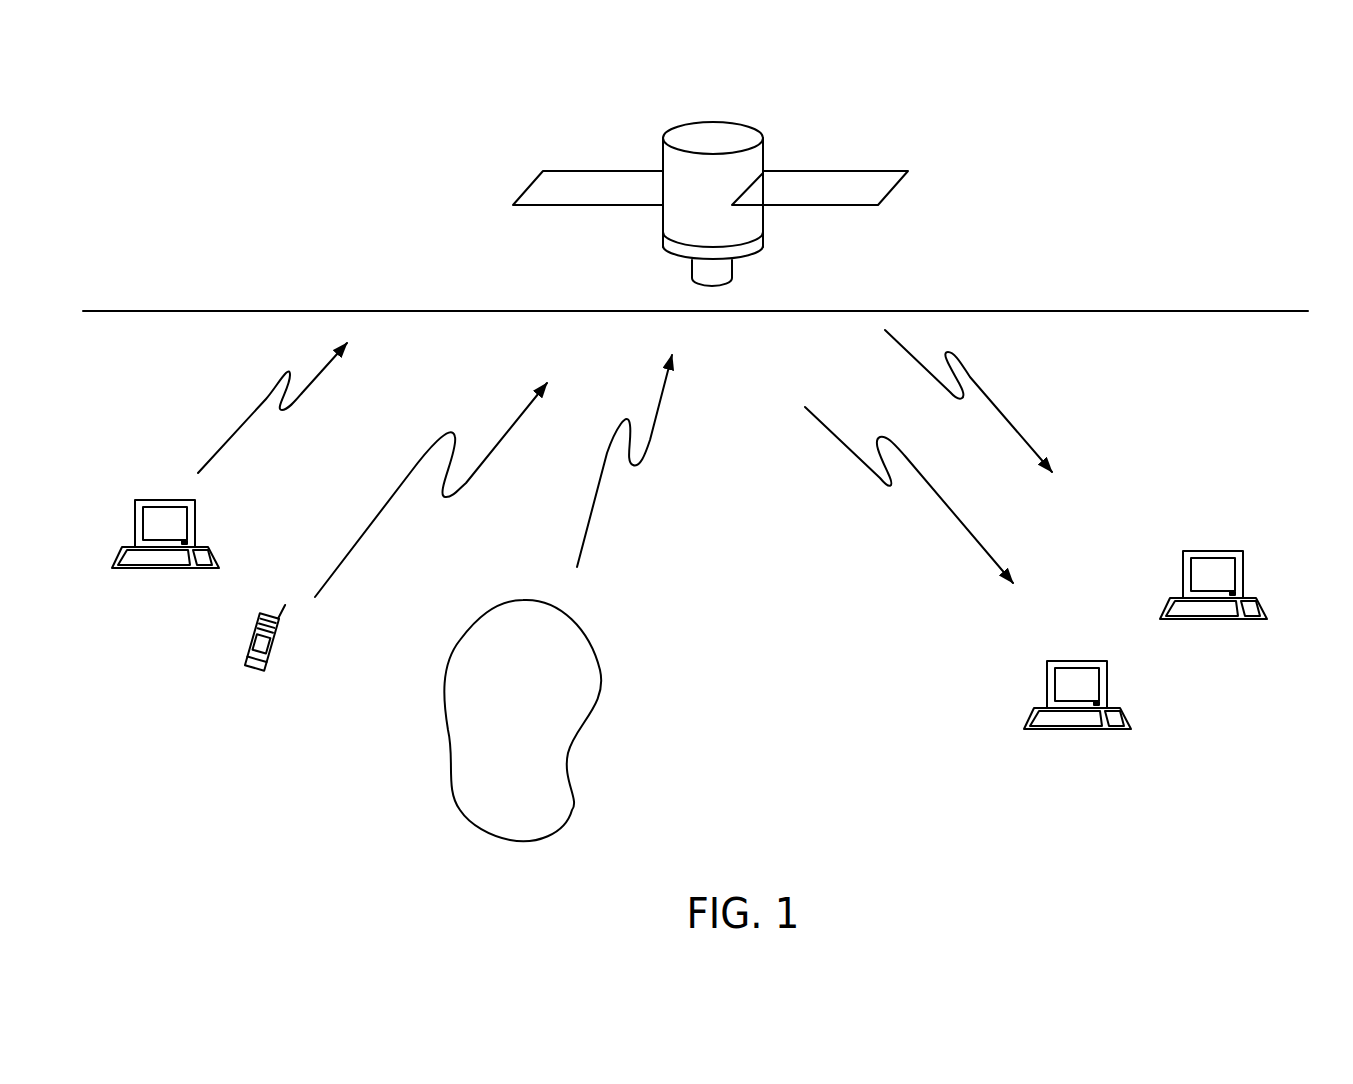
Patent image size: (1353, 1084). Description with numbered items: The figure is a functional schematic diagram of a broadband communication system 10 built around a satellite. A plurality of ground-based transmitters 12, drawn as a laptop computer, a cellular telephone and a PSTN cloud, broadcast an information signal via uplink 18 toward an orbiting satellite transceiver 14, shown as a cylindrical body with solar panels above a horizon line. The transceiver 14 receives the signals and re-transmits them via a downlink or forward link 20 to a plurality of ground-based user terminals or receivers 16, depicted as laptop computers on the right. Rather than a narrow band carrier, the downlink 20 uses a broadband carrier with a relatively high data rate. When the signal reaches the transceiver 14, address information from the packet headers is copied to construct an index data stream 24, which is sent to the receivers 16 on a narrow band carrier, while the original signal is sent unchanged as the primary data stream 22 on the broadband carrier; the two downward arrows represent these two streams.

The satellite communication system 10 is at (360, 184).
The source devices (laptop, cellular phone, PSTN) 12 is at (182, 570).
The satellite 14 is at (765, 143).
The receiving computer terminals 16 is at (1235, 547).
The uplink signals 18 is at (250, 418).
The ground segment 20 is at (1098, 262).
The downlink signal 22 is at (853, 467).
The downlink signal 24 is at (1002, 408).